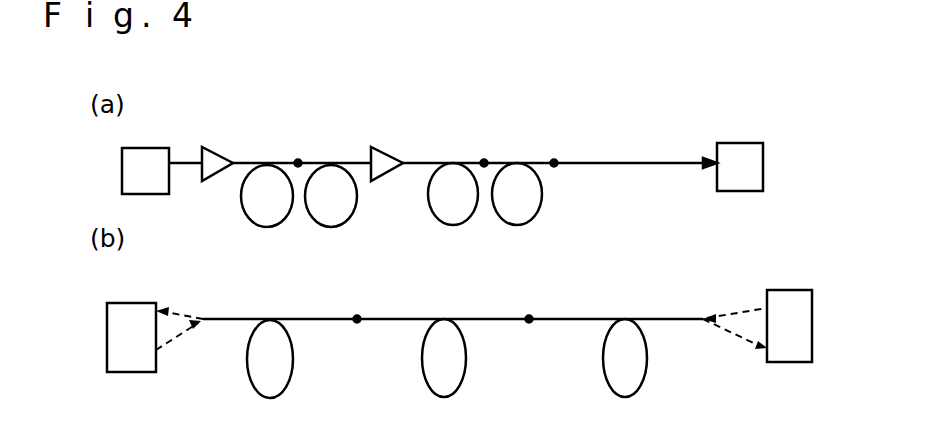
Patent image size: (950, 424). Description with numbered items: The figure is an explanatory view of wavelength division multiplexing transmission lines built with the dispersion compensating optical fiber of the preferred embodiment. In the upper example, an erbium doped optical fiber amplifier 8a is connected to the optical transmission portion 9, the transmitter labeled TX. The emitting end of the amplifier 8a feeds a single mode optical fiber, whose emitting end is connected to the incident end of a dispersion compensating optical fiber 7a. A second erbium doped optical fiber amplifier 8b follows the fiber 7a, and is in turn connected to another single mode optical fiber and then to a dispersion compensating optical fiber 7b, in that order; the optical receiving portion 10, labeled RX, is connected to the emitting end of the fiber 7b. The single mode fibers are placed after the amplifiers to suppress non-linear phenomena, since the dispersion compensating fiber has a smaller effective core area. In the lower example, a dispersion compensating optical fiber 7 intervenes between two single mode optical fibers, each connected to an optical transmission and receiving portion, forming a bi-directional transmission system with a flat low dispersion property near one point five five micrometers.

The dispersion compensating optical fiber 7 is at (421, 318).
The dispersion compensating optical fiber 7a is at (318, 163).
The dispersion compensating optical fiber 7b is at (504, 163).
The erbium doped optical fiber amplifier 8a is at (222, 156).
The erbium doped optical fiber amplifier 8b is at (392, 158).
The optical transmission portion 9 is at (143, 194).
The optical receiving portion 10 is at (740, 191).